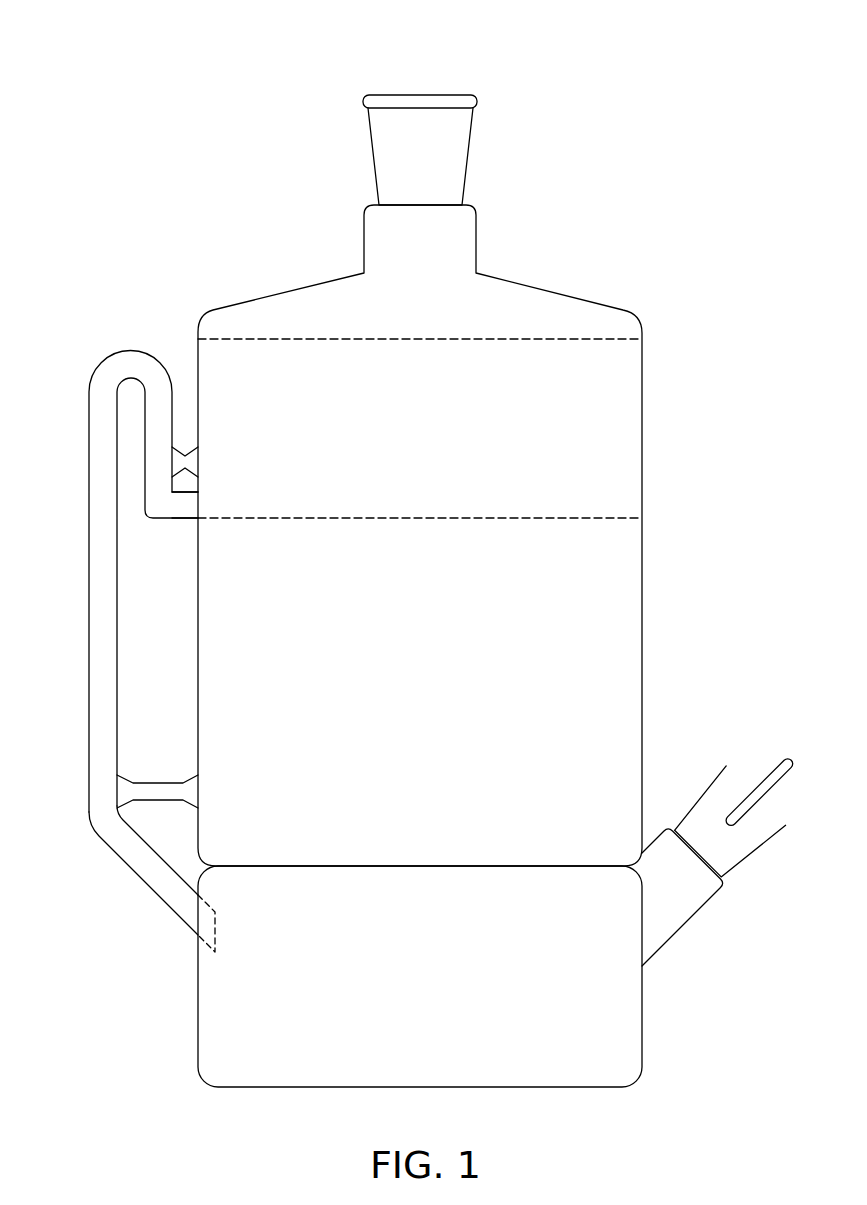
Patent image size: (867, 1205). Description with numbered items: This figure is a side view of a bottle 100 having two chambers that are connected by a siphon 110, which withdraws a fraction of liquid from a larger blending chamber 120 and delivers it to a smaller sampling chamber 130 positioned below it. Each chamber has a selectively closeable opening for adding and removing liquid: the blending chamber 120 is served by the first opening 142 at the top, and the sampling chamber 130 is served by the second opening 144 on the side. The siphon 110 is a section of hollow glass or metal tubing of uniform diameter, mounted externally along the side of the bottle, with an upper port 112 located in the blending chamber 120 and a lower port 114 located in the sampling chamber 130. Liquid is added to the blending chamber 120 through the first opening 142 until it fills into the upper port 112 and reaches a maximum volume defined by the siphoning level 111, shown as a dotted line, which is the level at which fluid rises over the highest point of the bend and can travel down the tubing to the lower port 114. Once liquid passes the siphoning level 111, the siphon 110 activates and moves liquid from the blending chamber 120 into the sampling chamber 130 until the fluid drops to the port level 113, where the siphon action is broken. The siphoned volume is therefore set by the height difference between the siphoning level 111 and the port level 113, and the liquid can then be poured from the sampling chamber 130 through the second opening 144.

The bottle 100 is at (210, 137).
The siphon 110 is at (89, 606).
The siphoning level 111 is at (420, 341).
The upper port 112 is at (172, 520).
The port level 113 is at (420, 520).
The lower port 114 is at (222, 931).
The blending chamber 120 is at (548, 290).
The sampling chamber 130 is at (198, 1022).
The first opening 142 is at (421, 94).
The second opening 144 is at (759, 788).